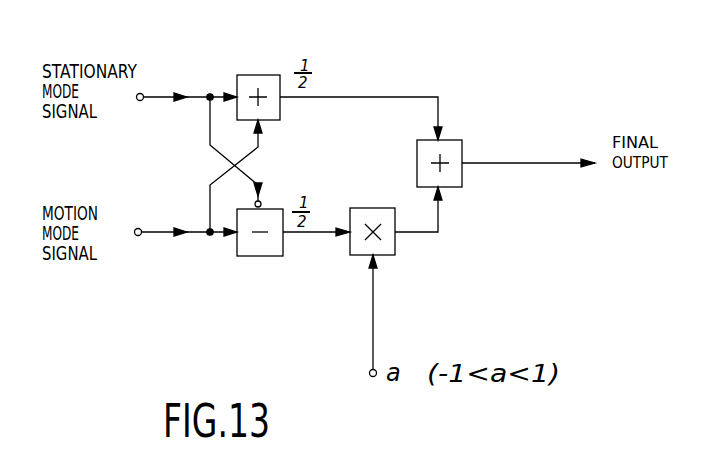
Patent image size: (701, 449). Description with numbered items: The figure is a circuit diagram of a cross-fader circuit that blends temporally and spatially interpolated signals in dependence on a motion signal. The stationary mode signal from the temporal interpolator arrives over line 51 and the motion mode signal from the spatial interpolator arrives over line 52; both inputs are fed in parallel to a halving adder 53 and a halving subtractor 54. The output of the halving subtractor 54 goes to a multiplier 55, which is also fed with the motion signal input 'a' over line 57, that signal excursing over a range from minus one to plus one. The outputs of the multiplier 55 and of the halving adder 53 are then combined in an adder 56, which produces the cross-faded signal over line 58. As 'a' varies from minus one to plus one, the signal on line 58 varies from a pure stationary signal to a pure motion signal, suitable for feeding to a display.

The input line 51 is at (160, 100).
The input line 52 is at (165, 231).
The halving adder 53 is at (237, 75).
The halving subtractor 54 is at (237, 256).
The multiplier 55 is at (395, 255).
The adder 56 is at (462, 140).
The motion signal input line 57 is at (373, 328).
The output line 58 is at (545, 163).